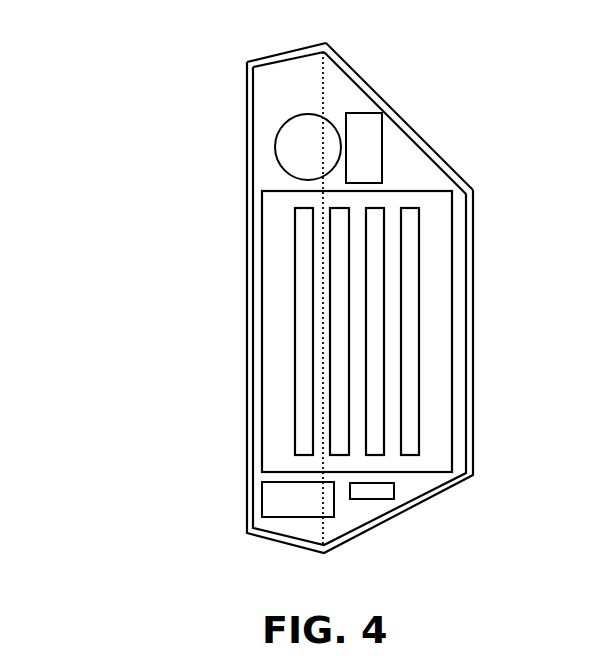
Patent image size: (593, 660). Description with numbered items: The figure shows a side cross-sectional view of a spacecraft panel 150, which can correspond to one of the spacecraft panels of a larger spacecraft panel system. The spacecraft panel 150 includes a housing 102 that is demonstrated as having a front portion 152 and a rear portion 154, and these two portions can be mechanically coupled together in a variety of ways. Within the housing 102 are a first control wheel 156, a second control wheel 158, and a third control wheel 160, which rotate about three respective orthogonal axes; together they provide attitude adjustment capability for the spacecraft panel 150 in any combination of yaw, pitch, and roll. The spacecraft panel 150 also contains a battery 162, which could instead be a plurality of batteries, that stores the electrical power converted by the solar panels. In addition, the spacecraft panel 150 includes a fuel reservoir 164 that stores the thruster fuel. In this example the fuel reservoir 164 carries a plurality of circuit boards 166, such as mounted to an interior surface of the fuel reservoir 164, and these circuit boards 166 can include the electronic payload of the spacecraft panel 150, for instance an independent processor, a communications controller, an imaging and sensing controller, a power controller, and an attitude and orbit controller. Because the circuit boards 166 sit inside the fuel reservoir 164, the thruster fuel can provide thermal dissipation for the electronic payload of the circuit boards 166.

The spacecraft panel 150 is at (105, 58).
The housing 102 is at (247, 190).
The front portion 152 is at (275, 55).
The rear portion 154 is at (363, 75).
The first control wheel 156 is at (280, 128).
The second control wheel 158 is at (382, 137).
The fuel reservoir 164 is at (262, 243).
The circuit boards 166 is at (295, 325).
The third control wheel 160 is at (262, 497).
The battery 162 is at (397, 492).